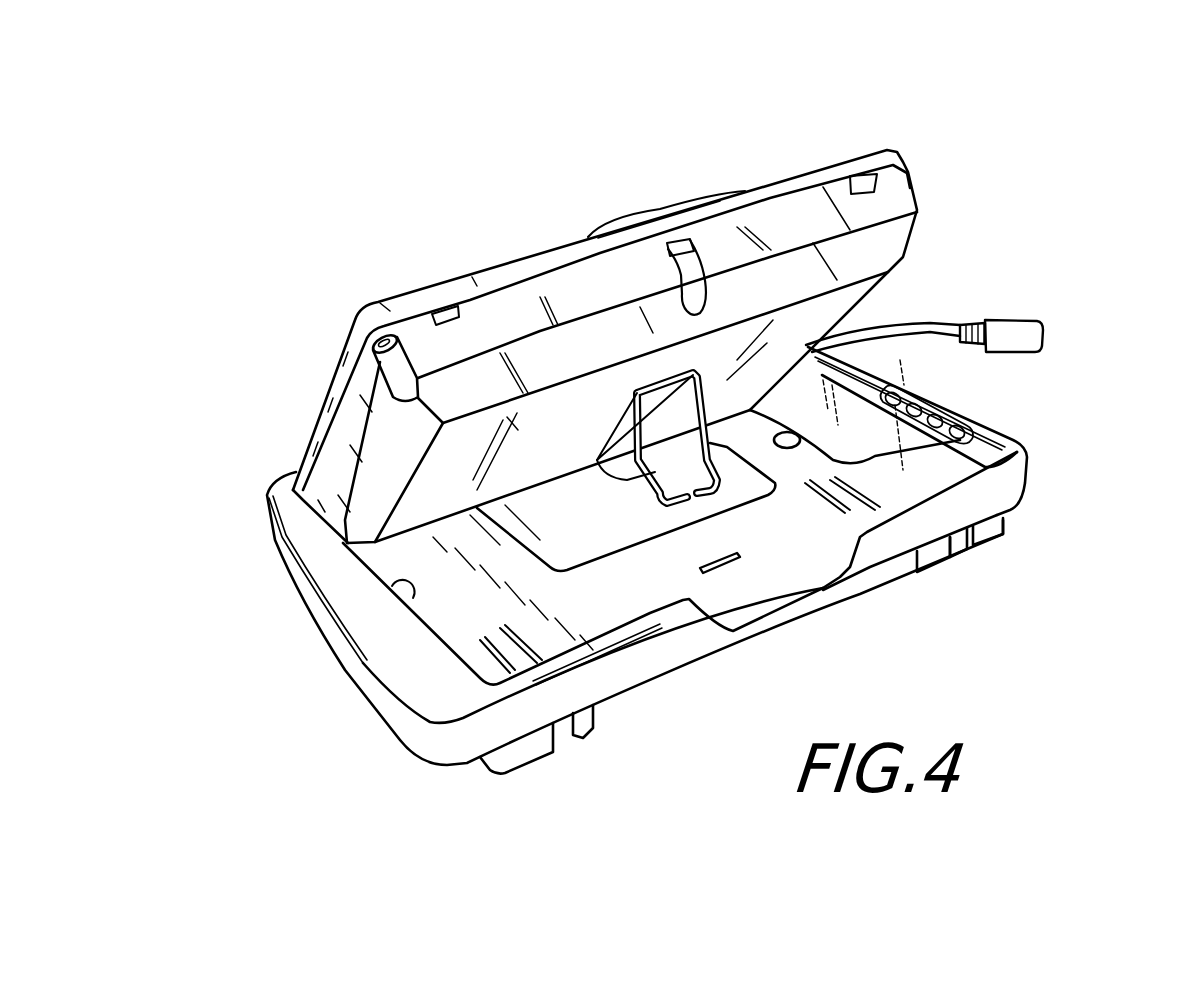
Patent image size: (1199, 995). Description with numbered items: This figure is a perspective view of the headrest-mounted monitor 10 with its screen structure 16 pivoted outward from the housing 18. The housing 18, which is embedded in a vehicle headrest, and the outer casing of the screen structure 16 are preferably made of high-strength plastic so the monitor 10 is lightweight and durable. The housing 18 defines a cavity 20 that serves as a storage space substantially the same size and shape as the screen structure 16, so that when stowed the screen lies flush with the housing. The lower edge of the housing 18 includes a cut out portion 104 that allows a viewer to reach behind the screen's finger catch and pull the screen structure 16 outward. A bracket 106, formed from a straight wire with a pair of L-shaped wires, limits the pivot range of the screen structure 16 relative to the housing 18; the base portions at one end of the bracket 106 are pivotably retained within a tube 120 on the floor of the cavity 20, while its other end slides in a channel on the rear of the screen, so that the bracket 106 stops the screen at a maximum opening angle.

The monitor 10 is at (1038, 133).
The screen structure 16 is at (347, 425).
The housing 18 is at (383, 645).
The cavity 20 is at (541, 605).
The cut out portion 104 is at (800, 593).
The bracket 106 is at (973, 436).
The tube 120 is at (720, 570).